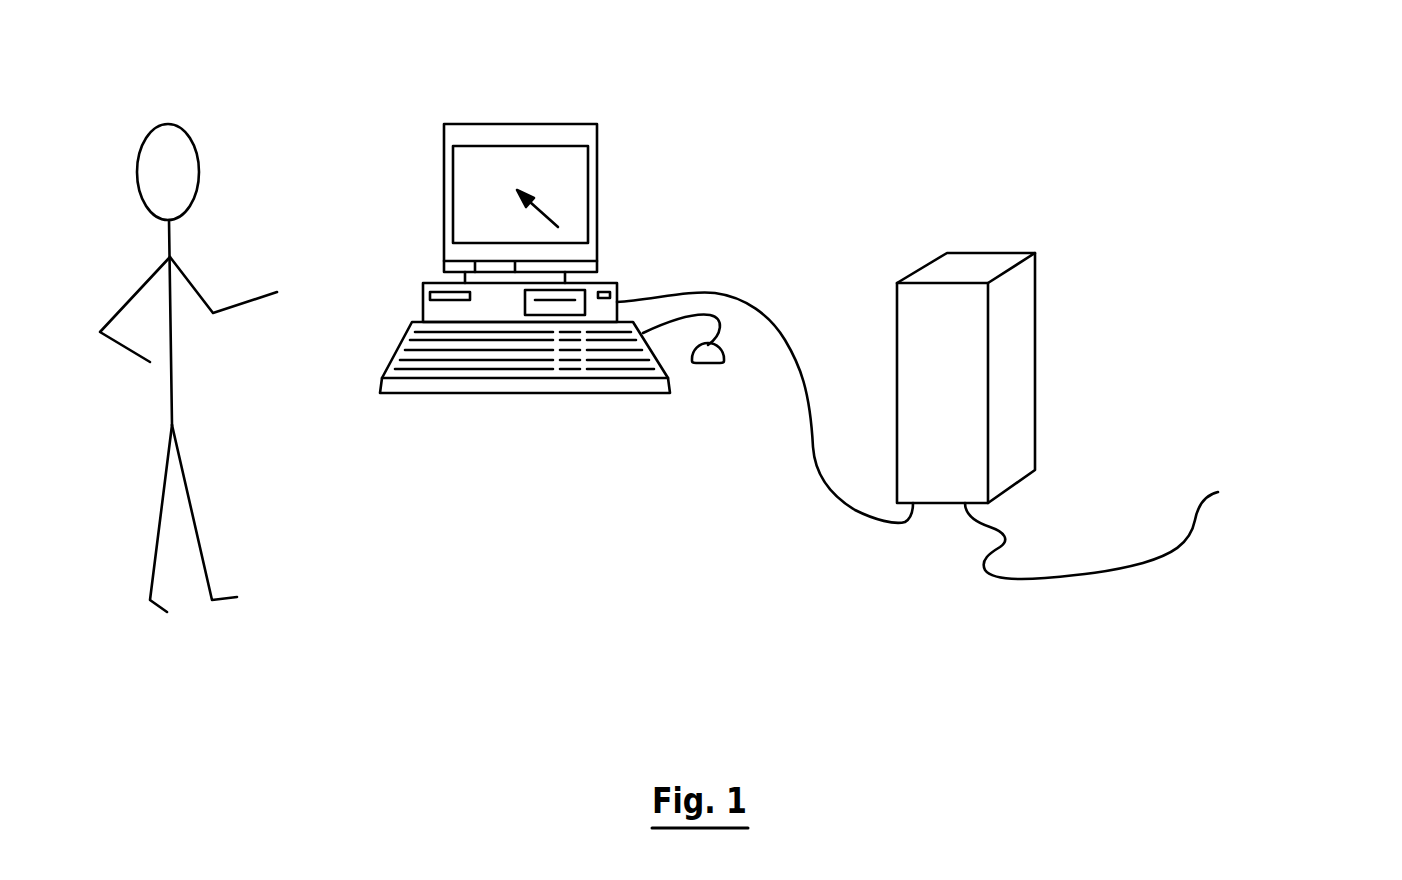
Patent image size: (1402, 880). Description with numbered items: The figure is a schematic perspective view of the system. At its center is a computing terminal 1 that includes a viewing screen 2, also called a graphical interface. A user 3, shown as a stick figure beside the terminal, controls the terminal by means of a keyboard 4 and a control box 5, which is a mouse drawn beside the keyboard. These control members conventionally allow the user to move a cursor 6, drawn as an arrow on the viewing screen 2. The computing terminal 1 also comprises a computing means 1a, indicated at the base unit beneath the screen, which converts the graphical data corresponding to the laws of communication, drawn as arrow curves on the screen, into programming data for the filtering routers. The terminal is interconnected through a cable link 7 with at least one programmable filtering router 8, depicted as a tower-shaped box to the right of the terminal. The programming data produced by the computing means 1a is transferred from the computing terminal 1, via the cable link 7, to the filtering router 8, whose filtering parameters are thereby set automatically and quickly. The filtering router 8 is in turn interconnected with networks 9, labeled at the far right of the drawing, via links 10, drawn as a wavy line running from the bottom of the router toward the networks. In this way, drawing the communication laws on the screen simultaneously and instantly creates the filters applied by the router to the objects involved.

The computing terminal 1 is at (523, 158).
The computing means 1a is at (622, 288).
The viewing screen 2 is at (460, 215).
The user 3 is at (167, 124).
The keyboard 4 is at (495, 365).
The control box 5 is at (713, 370).
The cursor 6 is at (543, 197).
The cable link 7 is at (778, 313).
The programmable filtering router 8 is at (960, 268).
The networks 9 is at (1267, 467).
The links 10 is at (1130, 560).